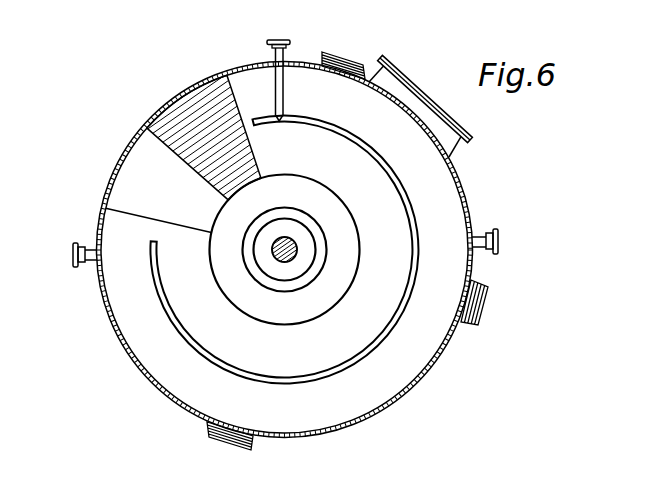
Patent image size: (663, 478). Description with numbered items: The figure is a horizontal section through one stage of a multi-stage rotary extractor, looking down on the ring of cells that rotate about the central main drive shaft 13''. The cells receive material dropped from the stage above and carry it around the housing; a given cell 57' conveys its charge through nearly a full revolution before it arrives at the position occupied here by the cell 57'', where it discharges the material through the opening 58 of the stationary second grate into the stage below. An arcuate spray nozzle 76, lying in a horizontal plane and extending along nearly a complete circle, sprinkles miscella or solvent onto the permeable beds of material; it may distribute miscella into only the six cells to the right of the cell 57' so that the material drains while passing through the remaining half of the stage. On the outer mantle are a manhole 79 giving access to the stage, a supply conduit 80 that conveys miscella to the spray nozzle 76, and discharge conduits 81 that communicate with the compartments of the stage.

The main drive shaft 13'' is at (289, 250).
The cell 57' is at (198, 171).
The cell 57'' is at (290, 251).
The opening 58 is at (209, 179).
The arcuate spray nozzle 76 is at (409, 210).
The manhole 79 is at (396, 73).
The supply conduit 80 is at (288, 50).
The discharge conduit 81 is at (73, 256).